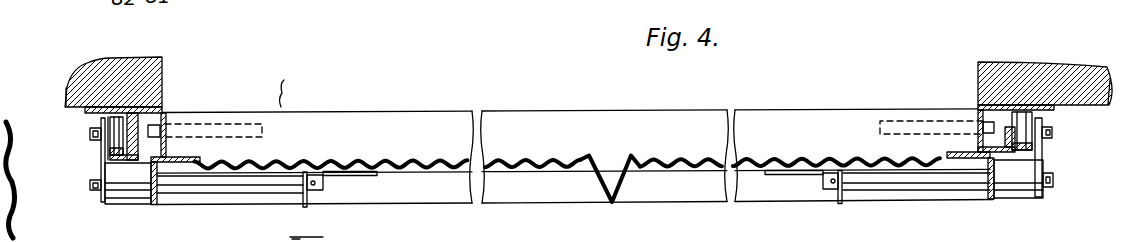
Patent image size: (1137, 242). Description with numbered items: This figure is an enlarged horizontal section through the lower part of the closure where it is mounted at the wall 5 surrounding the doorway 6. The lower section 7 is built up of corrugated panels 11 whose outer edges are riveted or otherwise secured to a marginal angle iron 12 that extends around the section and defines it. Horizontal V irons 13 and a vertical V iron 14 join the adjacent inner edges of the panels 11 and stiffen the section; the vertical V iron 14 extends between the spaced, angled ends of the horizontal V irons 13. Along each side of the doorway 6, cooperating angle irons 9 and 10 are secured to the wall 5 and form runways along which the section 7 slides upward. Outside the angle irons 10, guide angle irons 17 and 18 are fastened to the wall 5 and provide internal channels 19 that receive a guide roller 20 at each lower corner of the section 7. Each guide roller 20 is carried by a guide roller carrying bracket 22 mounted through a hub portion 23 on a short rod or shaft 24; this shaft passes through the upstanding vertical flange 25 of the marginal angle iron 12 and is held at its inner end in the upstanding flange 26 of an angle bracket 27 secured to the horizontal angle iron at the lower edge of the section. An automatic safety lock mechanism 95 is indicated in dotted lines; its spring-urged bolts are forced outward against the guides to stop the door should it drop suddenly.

The wall 5 is at (125, 62).
The doorway 6 is at (287, 82).
The lower section 7 is at (558, 130).
The angle iron 9 is at (155, 140).
The angle iron 10 is at (146, 157).
The panels 11 is at (427, 160).
The angle iron 12 is at (187, 157).
The horizontal V irons 13 is at (538, 188).
The vertical V iron 14 is at (600, 170).
The angle iron 17 is at (113, 157).
The angle iron 18 is at (68, 100).
The internal channels 19 is at (165, 76).
The guide roller 20 is at (103, 121).
The guide roller carrying bracket 22 is at (105, 149).
The hub portion 23 is at (117, 192).
The short rod or shaft 24 is at (247, 183).
The upstanding vertical flange 25 is at (150, 200).
The upstanding flange 26 is at (308, 205).
The angle bracket 27 is at (377, 175).
The automatic safety lock mechanism 95 is at (263, 124).